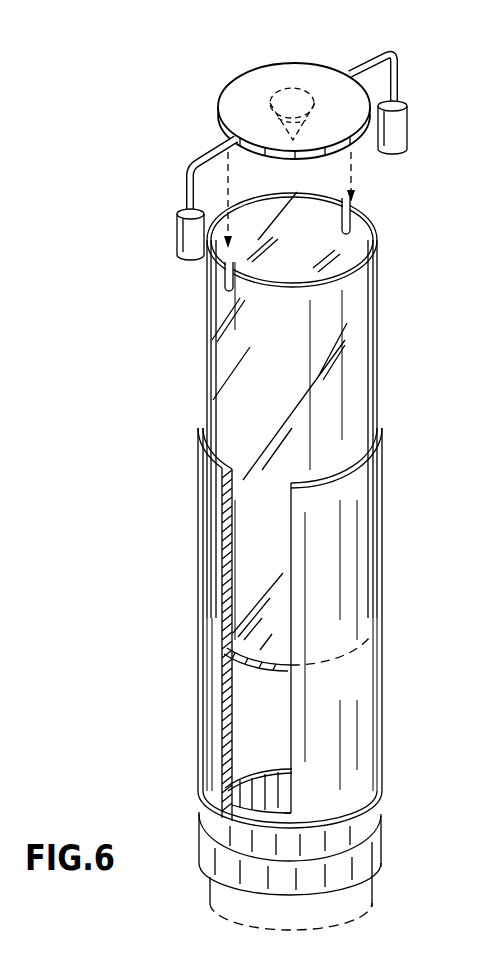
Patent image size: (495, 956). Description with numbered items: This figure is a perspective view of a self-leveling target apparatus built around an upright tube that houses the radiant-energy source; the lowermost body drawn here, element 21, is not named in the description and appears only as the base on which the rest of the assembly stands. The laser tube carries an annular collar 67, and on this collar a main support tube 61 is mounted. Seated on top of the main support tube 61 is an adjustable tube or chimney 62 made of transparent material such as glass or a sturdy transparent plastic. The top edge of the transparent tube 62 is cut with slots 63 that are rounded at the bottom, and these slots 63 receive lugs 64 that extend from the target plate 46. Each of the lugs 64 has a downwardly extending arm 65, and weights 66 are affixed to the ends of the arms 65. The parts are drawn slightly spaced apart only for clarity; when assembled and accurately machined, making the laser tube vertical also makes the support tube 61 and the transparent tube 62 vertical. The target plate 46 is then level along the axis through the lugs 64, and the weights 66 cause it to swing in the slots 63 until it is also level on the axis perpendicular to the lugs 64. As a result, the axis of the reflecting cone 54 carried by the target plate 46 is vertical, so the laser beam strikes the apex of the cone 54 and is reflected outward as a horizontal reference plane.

The base 21 is at (360, 893).
The target plate 46 is at (238, 73).
The reflecting cone 54 is at (314, 118).
The main support tube 61 is at (362, 598).
The adjustable tube or chimney 62 is at (367, 383).
The slots 63 is at (343, 234).
The lugs 64 is at (387, 54).
The downwardly extending arms 65 is at (402, 86).
The weights 66 is at (409, 134).
The annular collar 67 is at (360, 815).